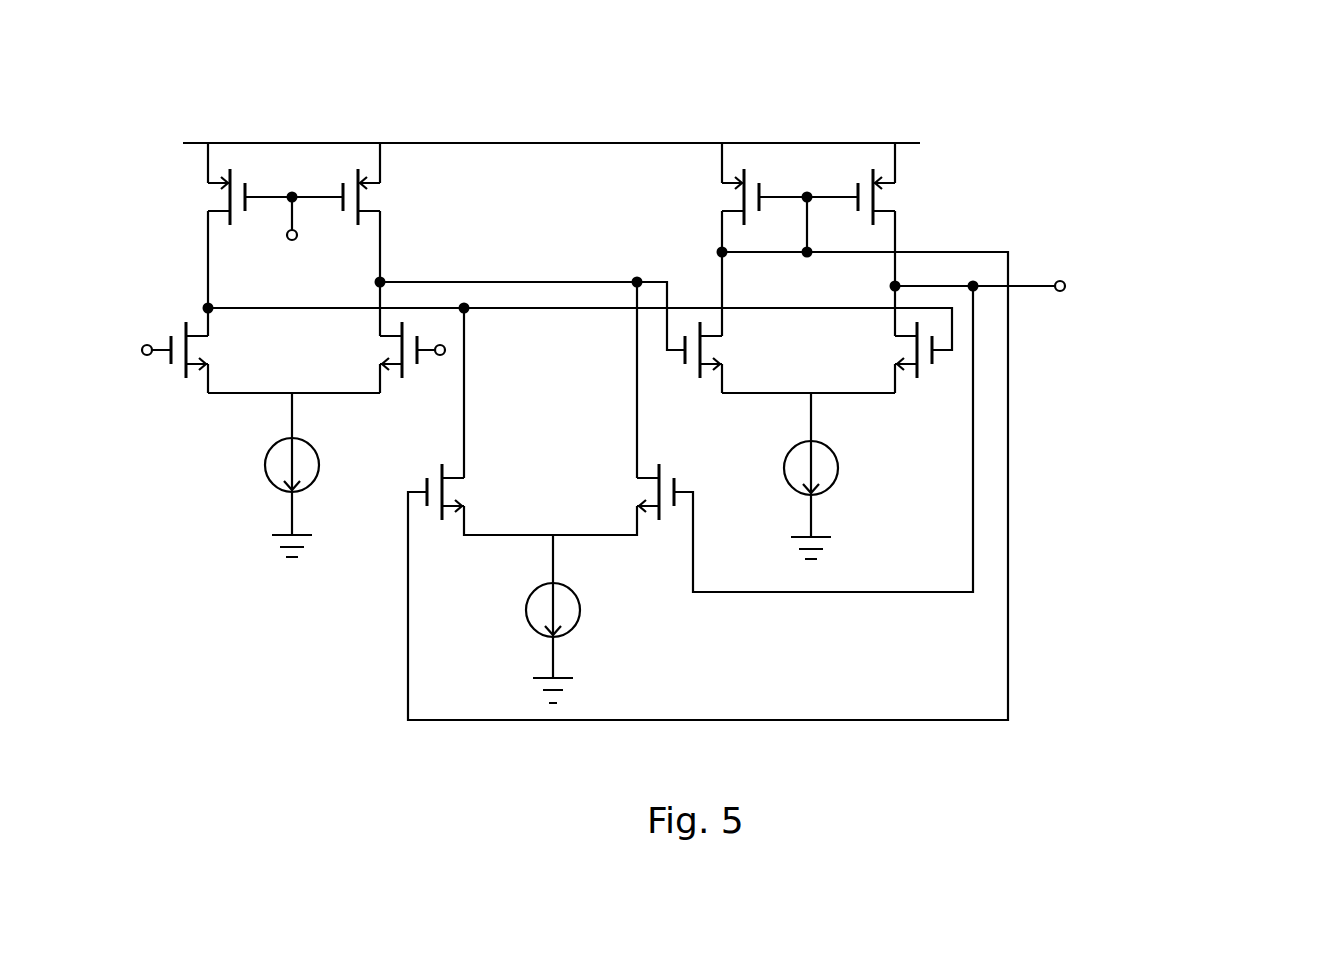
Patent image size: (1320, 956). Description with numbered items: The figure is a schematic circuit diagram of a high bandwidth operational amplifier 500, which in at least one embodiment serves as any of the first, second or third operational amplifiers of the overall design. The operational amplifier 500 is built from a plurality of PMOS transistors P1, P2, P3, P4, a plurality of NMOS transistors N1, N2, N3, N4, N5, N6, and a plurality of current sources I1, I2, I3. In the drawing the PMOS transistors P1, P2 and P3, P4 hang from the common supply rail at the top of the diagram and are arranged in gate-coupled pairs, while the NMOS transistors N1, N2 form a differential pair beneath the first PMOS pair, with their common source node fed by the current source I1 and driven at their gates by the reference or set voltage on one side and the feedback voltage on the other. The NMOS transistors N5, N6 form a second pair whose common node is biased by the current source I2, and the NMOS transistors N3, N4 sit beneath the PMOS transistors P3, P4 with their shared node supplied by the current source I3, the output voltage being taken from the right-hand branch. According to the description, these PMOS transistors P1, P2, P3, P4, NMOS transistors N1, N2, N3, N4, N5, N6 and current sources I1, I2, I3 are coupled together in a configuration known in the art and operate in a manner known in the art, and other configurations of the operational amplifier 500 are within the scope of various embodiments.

The high bandwidth operational amplifier 500 is at (1058, 72).
The PMOS transistor P1 is at (206, 197).
The PMOS transistor P2 is at (380, 197).
The PMOS transistor P3 is at (717, 197).
The PMOS transistor P4 is at (894, 197).
The NMOS transistor N1 is at (205, 350).
The NMOS transistor N2 is at (379, 350).
The NMOS transistor N3 is at (723, 350).
The NMOS transistor N4 is at (891, 350).
The NMOS transistor N5 is at (466, 492).
The NMOS transistor N6 is at (632, 492).
The current source I1 is at (279, 475).
The current source I2 is at (568, 619).
The current source I3 is at (822, 476).